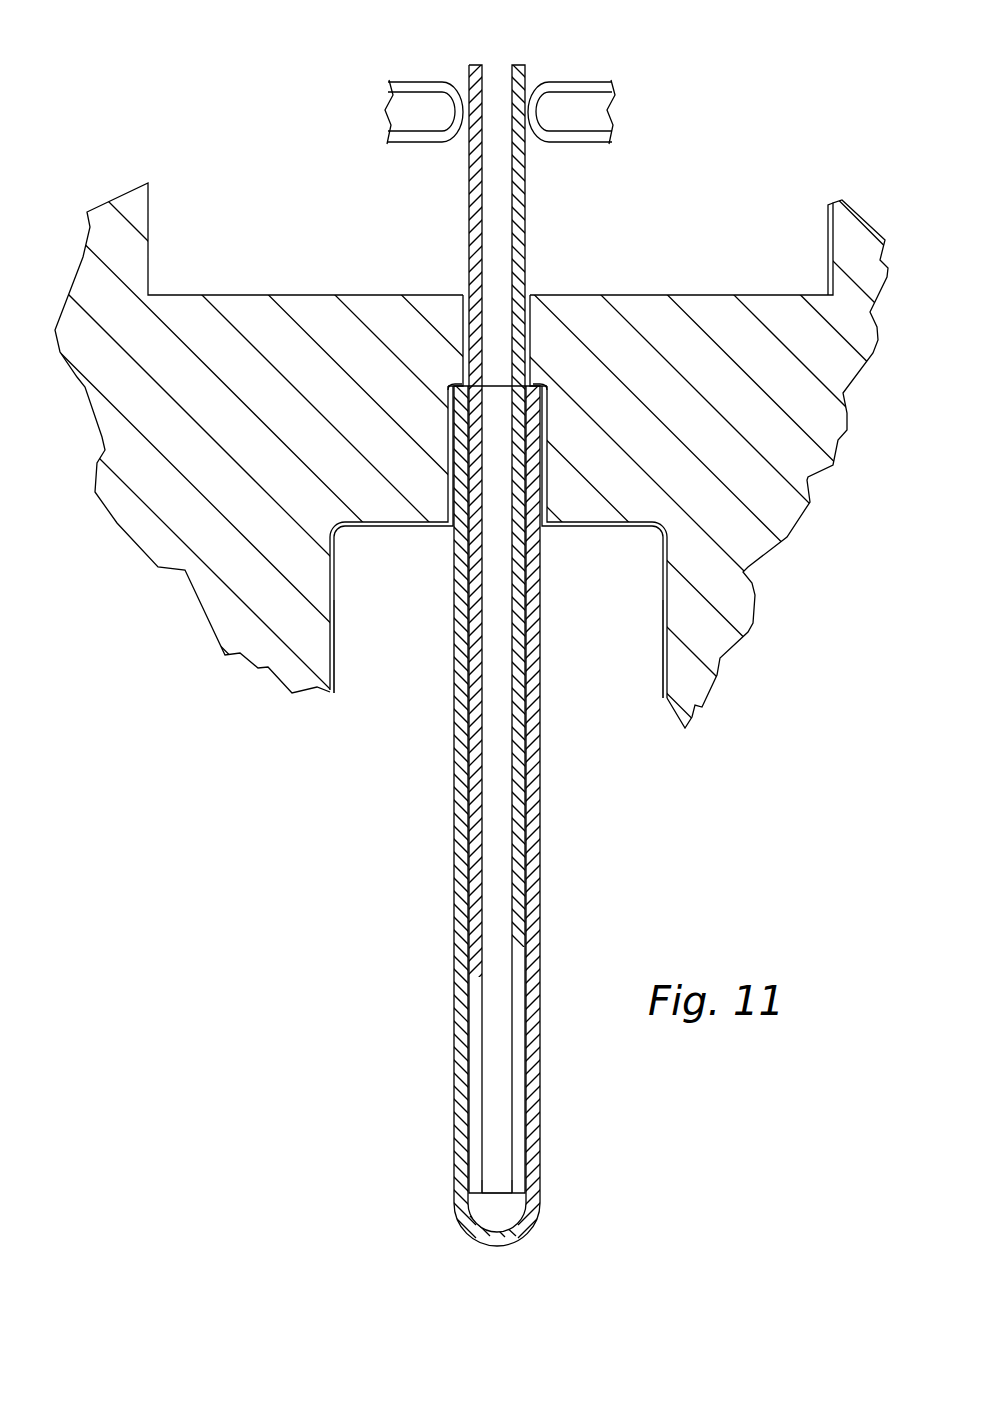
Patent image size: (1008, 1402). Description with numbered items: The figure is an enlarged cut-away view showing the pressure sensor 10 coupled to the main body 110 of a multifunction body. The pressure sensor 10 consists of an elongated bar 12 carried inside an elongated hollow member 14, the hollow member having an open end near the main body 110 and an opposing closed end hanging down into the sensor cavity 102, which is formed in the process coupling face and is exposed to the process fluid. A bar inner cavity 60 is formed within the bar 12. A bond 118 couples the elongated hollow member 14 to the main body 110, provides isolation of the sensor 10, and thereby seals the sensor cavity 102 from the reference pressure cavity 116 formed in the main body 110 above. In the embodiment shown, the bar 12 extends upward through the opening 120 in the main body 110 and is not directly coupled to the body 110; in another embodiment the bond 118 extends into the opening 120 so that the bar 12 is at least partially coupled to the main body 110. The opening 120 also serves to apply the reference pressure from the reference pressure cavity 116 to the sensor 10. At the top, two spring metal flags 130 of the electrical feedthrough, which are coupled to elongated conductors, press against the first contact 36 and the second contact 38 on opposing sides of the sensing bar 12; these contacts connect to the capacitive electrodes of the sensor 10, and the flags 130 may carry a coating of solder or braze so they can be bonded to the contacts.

The pressure sensor 10 is at (455, 643).
The elongated bar 12 is at (470, 238).
The elongated hollow member 14 is at (468, 656).
The first contact 36 is at (463, 68).
The second contact 38 is at (528, 72).
The bar inner cavity 60 is at (495, 793).
The sensor cavity 102 is at (498, 649).
The main body 110 is at (850, 218).
The reference pressure cavity 116 is at (736, 237).
The bond 118 is at (453, 525).
The opening 120 is at (525, 303).
The spring metal flags 130 is at (403, 107).